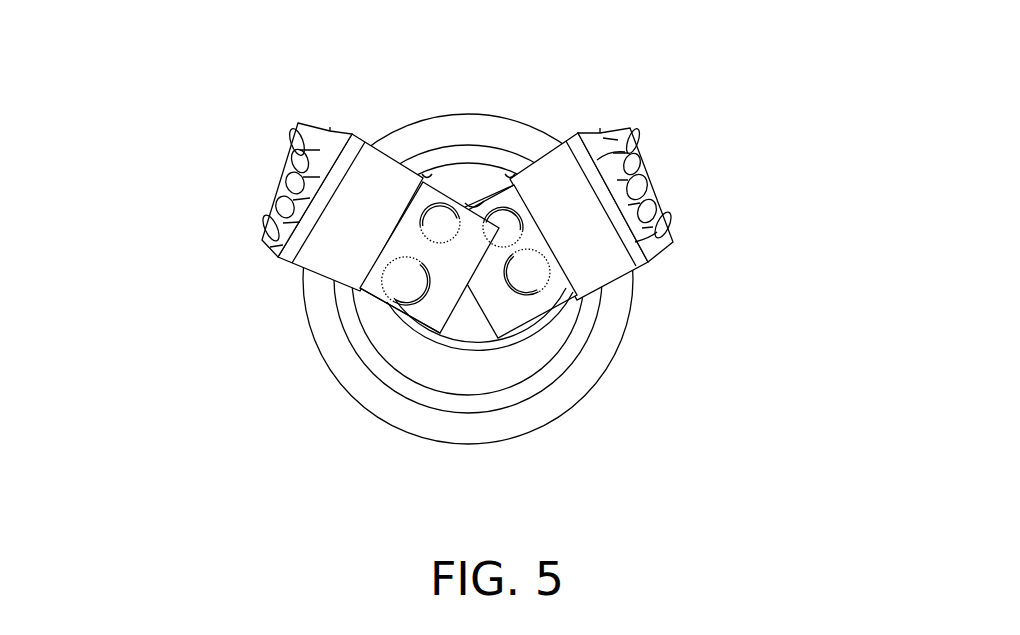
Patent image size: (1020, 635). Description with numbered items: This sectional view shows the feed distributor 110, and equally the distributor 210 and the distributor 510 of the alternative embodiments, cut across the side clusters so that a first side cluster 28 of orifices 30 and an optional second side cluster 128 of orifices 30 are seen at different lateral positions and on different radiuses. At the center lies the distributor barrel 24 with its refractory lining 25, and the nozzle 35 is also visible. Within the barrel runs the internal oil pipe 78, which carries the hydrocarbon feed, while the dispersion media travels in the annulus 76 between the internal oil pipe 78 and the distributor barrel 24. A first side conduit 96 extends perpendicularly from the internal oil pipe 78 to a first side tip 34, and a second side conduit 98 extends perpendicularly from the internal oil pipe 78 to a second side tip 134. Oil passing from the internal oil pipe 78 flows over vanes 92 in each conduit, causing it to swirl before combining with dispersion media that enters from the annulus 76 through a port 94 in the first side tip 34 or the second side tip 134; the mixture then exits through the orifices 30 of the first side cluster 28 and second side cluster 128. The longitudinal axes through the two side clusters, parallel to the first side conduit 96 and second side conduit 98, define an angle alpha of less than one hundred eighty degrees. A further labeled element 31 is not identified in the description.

The feed distributor 110 is at (360, 65).
The distributor 210 is at (171, 44).
The distributor 510 is at (223, 44).
The first side cluster 28 is at (190, 154).
The second side cluster 128 is at (740, 157).
The orifices 30 is at (293, 160).
The insert seat strip 31 is at (318, 128).
The first side tip 34 is at (278, 185).
The second side tip 134 is at (652, 192).
The nozzle 35 is at (634, 293).
The refractory lining 25 is at (588, 322).
The distributor barrel 24 is at (522, 387).
The annulus 76 is at (383, 340).
The internal oil pipe 78 is at (473, 347).
The vanes 92 is at (404, 300).
The port 94 is at (428, 176).
The first side conduit 96 is at (420, 315).
The second side conduit 98 is at (517, 180).